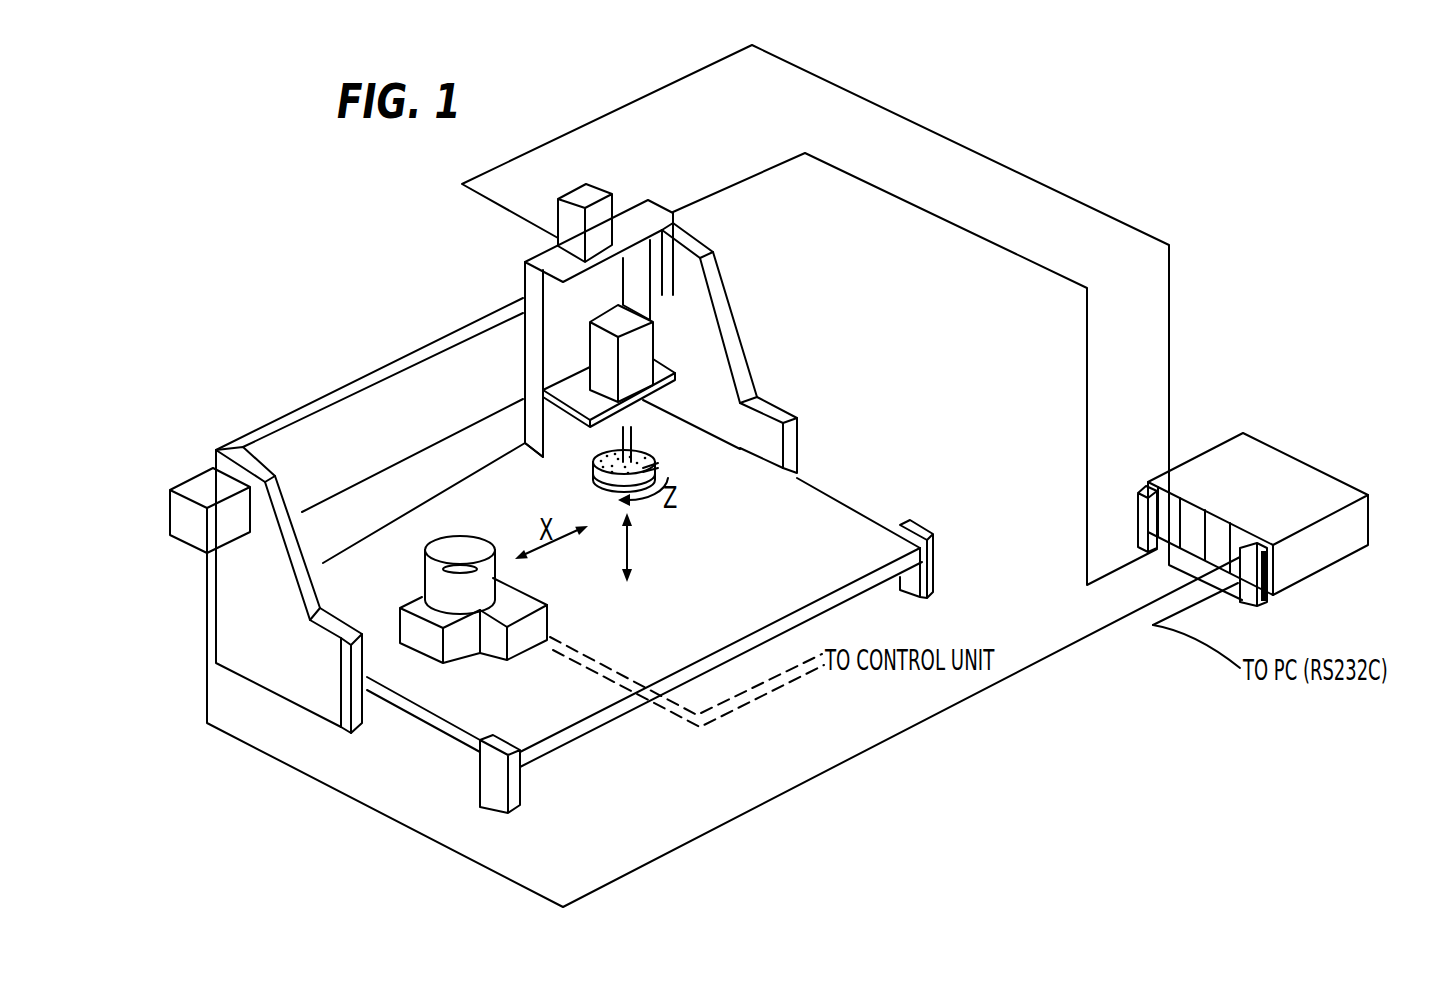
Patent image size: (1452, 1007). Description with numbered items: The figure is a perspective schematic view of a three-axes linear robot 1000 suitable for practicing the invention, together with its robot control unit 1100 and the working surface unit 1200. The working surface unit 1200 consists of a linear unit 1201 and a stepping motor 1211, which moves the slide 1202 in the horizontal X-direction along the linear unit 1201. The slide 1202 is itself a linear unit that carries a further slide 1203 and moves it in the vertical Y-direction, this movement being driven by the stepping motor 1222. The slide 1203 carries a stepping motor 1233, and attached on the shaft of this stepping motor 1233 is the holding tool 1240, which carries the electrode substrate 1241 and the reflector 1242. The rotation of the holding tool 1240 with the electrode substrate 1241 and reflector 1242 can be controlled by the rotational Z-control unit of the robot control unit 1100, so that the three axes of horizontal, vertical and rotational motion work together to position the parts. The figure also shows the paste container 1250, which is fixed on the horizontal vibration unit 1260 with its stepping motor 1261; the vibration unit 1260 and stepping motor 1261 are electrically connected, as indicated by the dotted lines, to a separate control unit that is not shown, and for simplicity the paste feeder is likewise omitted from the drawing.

The three-axes linear robot 1000 is at (283, 237).
The robot control unit 1100 is at (1338, 518).
The working surface unit 1200 is at (793, 615).
The linear unit 1201 is at (428, 352).
The slide 1202 is at (537, 283).
The slide 1203 is at (672, 375).
The stepping motor 1211 is at (222, 497).
The stepping motor 1222 is at (570, 238).
The stepping motor 1233 is at (643, 350).
The holding tool 1240 is at (631, 430).
The electrode substrate 1241 is at (657, 480).
The reflector 1242 is at (652, 460).
The paste container 1250 is at (433, 584).
The horizontal vibration unit 1260 is at (422, 634).
The stepping motor 1261 is at (500, 640).